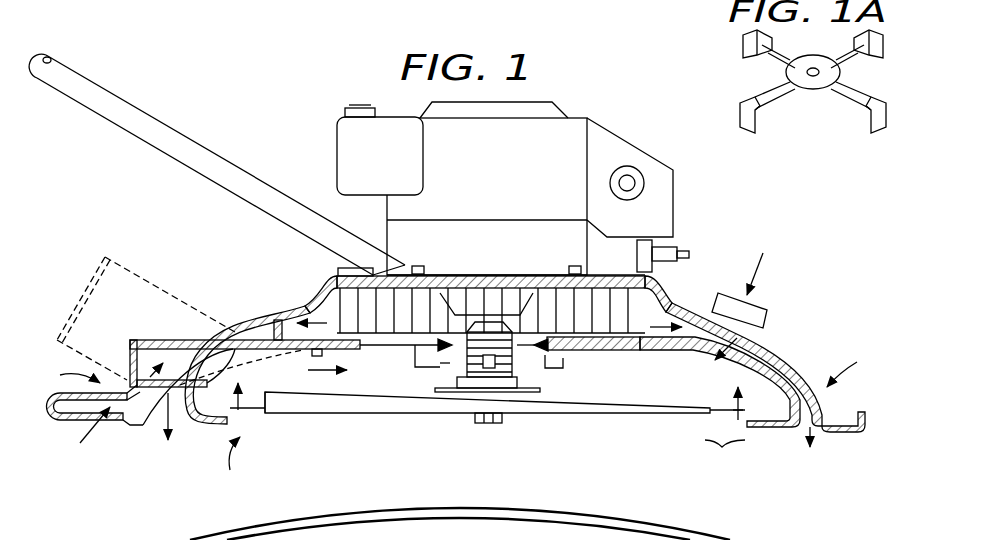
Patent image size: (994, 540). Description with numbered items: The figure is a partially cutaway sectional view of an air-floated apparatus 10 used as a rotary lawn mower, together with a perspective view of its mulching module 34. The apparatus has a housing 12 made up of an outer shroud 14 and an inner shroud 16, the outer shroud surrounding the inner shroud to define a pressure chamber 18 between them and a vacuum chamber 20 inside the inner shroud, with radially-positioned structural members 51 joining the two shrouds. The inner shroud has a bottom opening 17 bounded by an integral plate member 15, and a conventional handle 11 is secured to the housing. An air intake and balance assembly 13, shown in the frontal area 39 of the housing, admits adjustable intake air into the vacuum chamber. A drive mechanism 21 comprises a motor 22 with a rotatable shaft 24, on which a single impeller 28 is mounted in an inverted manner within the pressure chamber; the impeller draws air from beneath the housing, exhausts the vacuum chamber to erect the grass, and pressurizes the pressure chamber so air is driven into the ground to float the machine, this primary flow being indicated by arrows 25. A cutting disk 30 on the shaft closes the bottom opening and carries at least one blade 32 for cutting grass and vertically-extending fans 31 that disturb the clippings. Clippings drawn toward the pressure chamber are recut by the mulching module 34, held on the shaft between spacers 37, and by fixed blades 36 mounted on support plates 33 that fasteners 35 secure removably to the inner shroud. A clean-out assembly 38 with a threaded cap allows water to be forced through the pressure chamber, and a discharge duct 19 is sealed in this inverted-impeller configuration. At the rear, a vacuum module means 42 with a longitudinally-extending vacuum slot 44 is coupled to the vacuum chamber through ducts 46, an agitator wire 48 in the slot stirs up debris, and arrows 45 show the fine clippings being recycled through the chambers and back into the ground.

In FIG. 1, the air-floated apparatus 10 is at (732, 221).
In FIG. 1, the handle 11 is at (200, 143).
In FIG. 1, the housing 12 is at (247, 283).
In FIG. 1, the air intake and balance assembly 13 is at (773, 313).
In FIG. 1, the outer shroud 14 is at (235, 322).
In FIG. 1, the integral plate member 15 is at (210, 430).
In FIG. 1, the inner shroud 16 is at (797, 407).
In FIG. 1, the bottom opening 17 is at (228, 439).
In FIG. 1, the pressure chamber 18 is at (700, 374).
In FIG. 1, the discharge duct 19 is at (125, 272).
In FIG. 1, the vacuum chamber 20 is at (367, 383).
In FIG. 1, the drive mechanism 21 is at (479, 254).
In FIG. 1, the motor 22 is at (607, 145).
In FIG. 1, the rotatable shaft 24 is at (520, 270).
In FIG. 1, the primary air flow arrows 25 is at (682, 333).
In FIG. 1, the impeller 28 is at (663, 266).
In FIG. 1, the cutting disk 30 is at (507, 400).
In FIG. 1, the vertically-extending fan 31 is at (293, 398).
In FIG. 1, the blade 32 is at (258, 410).
In FIG. 1, the support plates 33 is at (357, 350).
In FIG. 1, the mulching module 34 is at (443, 363).
In FIG. 1A, the mulching module 34 is at (790, 70).
In FIG. 1, the fasteners 35 is at (662, 351).
In FIG. 1, the fixed blades 36 is at (380, 350).
In FIG. 1, the spacers 37 is at (530, 370).
In FIG. 1, the clean-out assembly 38 is at (337, 273).
In FIG. 1, the frontal area 39 is at (853, 362).
In FIG. 1, the vacuum module means 42 is at (66, 365).
In FIG. 1, the vacuum slot 44 is at (109, 448).
In FIG. 1, the recycling arrows 45 is at (550, 360).
In FIG. 1, the ducts 46 is at (158, 357).
In FIG. 1, the agitator wire 48 is at (85, 417).
In FIG. 1, the structural members 51 is at (278, 327).